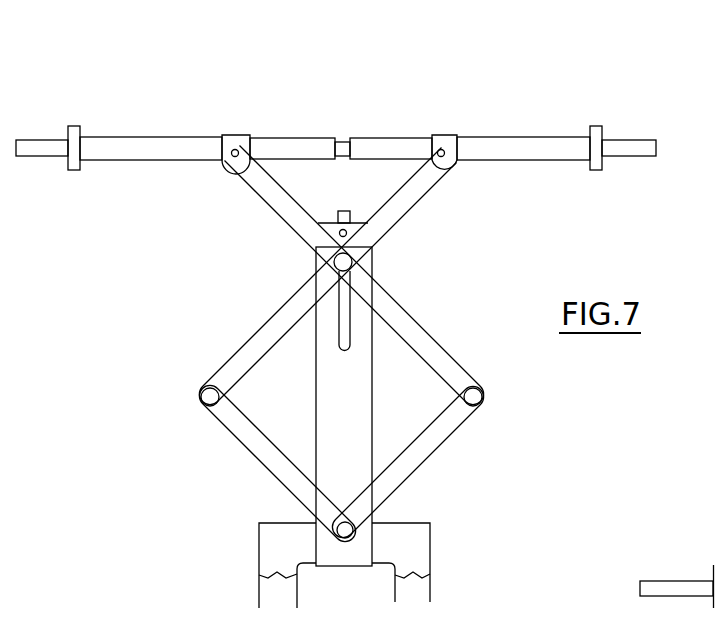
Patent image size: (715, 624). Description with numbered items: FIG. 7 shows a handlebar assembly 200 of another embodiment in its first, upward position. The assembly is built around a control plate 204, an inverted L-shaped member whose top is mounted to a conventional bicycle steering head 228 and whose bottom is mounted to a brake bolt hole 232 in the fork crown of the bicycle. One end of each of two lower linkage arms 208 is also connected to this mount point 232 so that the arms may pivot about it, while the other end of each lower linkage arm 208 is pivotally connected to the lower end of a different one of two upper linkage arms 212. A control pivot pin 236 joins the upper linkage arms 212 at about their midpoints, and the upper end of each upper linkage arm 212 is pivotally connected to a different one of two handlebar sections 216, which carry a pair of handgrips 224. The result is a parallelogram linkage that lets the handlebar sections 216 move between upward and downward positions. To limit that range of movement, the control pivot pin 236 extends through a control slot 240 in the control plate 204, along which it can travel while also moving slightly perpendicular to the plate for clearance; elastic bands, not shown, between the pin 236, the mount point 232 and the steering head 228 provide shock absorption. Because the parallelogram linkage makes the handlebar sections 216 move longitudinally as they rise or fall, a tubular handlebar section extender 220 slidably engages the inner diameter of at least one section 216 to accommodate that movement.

The handlebar assembly 200 is at (394, 70).
The control plate 204 is at (374, 410).
The lower linkage arms 208 is at (240, 446).
The upper linkage arms 212 is at (270, 205).
The handlebar sections 216 is at (158, 144).
The handlebar section extender 220 is at (346, 142).
The handgrips 224 is at (52, 131).
The bicycle steering head 228 is at (341, 208).
The brake bolt hole 232 is at (352, 537).
The control pivot pin 236 is at (352, 265).
The control slot 240 is at (350, 339).